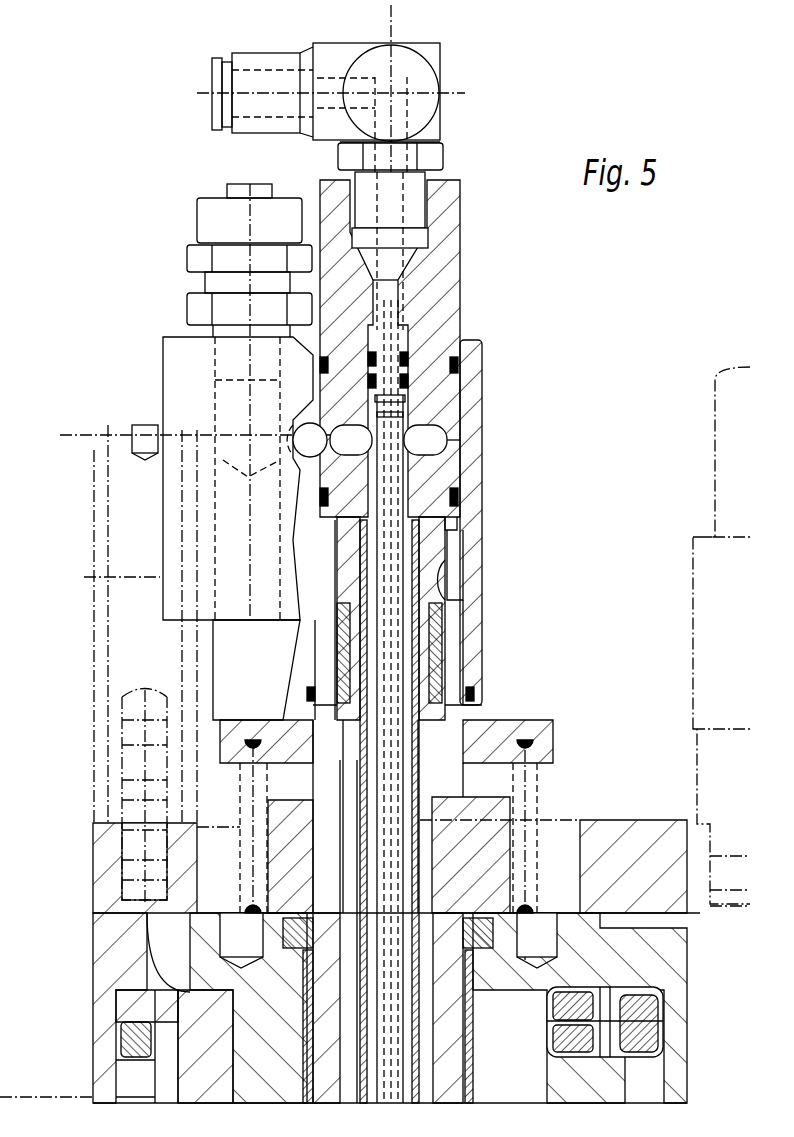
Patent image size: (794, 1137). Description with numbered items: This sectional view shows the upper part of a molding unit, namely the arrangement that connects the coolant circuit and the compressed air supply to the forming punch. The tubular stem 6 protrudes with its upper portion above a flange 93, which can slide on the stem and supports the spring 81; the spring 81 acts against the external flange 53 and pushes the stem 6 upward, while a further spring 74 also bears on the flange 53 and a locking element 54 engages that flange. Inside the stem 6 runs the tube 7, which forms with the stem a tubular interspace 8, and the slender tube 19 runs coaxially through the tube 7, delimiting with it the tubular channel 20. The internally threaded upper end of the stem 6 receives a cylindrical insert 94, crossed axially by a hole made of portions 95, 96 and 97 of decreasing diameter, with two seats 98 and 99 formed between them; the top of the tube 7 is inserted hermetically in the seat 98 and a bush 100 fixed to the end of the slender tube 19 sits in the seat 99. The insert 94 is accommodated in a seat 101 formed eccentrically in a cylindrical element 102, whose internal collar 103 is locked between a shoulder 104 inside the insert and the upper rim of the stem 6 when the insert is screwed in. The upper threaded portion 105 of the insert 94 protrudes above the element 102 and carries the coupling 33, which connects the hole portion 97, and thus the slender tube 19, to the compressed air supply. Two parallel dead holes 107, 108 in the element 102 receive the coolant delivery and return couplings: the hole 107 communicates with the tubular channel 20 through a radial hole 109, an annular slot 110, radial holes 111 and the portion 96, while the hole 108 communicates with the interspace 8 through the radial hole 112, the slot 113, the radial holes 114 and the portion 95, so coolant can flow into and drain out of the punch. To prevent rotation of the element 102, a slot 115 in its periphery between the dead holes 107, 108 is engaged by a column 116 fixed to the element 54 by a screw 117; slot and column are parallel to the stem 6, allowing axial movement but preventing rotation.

The coupling 33 is at (440, 75).
The upper threaded portion 105 is at (462, 202).
The hole portion 97 is at (403, 297).
The cylindrical insert 94 is at (462, 300).
The seat 99 is at (430, 340).
The bush 100 is at (440, 365).
The seat 101 is at (445, 390).
The radial holes 111 is at (460, 422).
The annular slot 110 is at (460, 447).
The hole portion 96 is at (462, 476).
The shoulder 104 is at (455, 535).
The seat 98 is at (440, 550).
The internal collar 103 is at (455, 573).
The slot 113 is at (445, 600).
The cylindrical element 102 is at (488, 627).
The slender tube 19 is at (397, 667).
The hole portion 95 is at (430, 650).
The tube 7 is at (440, 712).
The flange 93 is at (462, 722).
The tubular channel 20 is at (515, 752).
The tubular stem 6 is at (455, 777).
The tubular interspace 8 is at (427, 820).
The locking element 54 is at (640, 830).
The external flange 53 is at (163, 940).
The spring 74 is at (193, 1043).
The spring 81 is at (243, 797).
The screw 117 is at (137, 763).
The column 116 is at (100, 682).
The slot 115 is at (122, 626).
The dead hole 108 is at (160, 512).
The dead hole 107 is at (250, 402).
The radial hole 109 is at (310, 430).
The radial hole 112 is at (335, 575).
The radial holes 114 is at (337, 626).